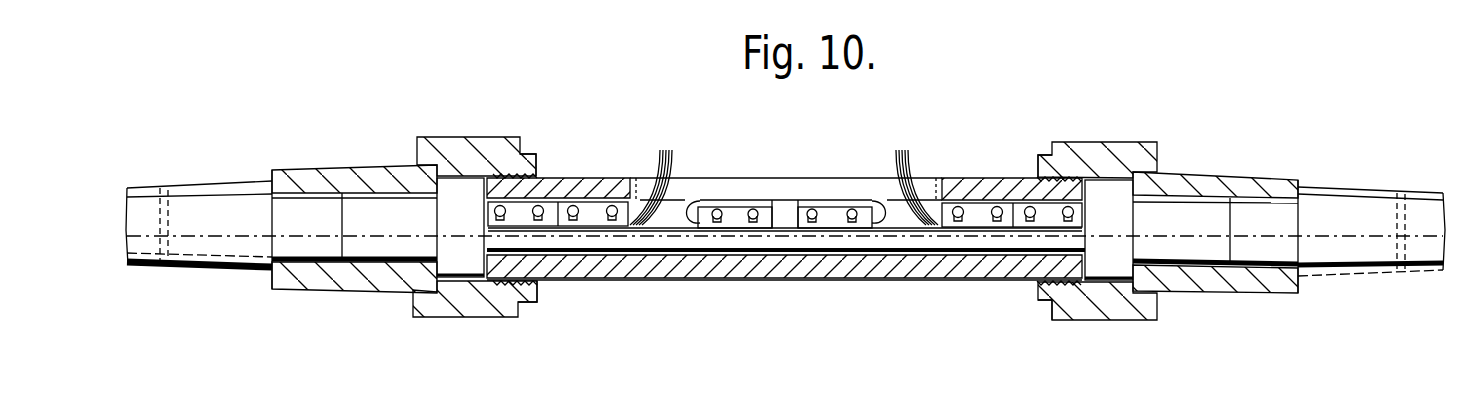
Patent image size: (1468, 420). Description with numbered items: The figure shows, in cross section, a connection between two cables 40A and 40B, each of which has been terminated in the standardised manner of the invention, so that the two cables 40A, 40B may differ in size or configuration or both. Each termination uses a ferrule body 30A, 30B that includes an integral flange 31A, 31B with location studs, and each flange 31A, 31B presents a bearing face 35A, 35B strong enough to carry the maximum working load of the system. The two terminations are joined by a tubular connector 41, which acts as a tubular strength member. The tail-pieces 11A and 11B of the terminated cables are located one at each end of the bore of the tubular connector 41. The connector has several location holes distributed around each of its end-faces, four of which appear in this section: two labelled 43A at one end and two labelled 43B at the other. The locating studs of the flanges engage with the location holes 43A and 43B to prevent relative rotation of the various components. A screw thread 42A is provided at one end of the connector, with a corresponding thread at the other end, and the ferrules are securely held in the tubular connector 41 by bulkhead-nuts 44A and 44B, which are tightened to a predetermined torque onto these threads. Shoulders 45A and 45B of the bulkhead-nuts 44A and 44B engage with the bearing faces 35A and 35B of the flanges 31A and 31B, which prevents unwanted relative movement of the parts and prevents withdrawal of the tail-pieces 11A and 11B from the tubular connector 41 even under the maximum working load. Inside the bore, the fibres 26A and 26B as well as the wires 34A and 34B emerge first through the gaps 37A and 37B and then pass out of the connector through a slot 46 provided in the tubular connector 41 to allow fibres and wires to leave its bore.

The cable 40A is at (178, 198).
The cable 40B is at (1367, 200).
The bearing face 35A is at (414, 178).
The bearing face 35B is at (1172, 176).
The ferrule body 30A is at (423, 247).
The ferrule body 30B is at (1182, 252).
The bulkhead-nut 44A is at (425, 150).
The bulkhead-nut 44B is at (1177, 172).
The shoulder 45A is at (530, 153).
The shoulder 45B is at (1043, 162).
The screw thread 42A is at (517, 297).
The location hole 43A is at (505, 172).
The location hole 43B is at (1077, 178).
The flange 31A is at (458, 188).
The flange 31B is at (1107, 192).
The tubular connector 41 is at (602, 180).
The slot 46 is at (780, 178).
The wire 34A is at (690, 200).
The wire 34B is at (880, 200).
The gap 37A is at (670, 222).
The gap 37B is at (907, 223).
The tail-piece 11A is at (735, 240).
The tail-piece 11B is at (818, 243).
The fibre 26A is at (658, 152).
The fibre 26B is at (915, 168).